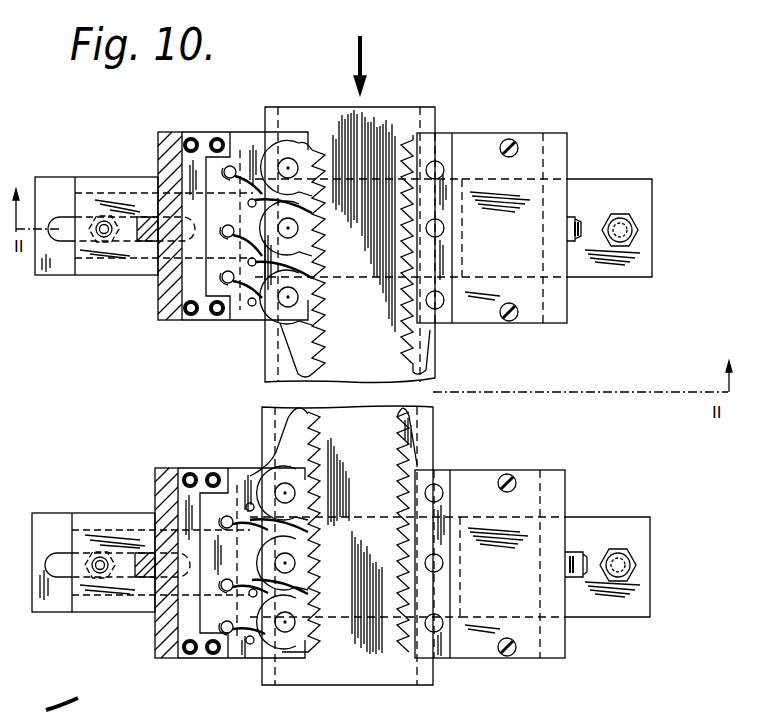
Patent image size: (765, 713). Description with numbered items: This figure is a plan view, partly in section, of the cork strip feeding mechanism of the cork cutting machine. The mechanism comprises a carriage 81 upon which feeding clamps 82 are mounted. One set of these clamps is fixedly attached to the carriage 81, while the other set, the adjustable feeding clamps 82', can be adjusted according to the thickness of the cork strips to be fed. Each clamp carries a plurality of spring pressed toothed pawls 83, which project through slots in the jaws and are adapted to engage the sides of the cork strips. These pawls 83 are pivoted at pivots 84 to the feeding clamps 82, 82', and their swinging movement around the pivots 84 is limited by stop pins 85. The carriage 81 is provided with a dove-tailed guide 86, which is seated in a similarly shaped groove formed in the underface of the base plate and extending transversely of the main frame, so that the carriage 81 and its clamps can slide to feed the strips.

The carriage 81 is at (605, 519).
The feeding clamps 82 is at (491, 378).
The adjustable feeding clamps 82' is at (166, 377).
The spring pressed toothed pawls 83 is at (317, 152).
The pivots 84 is at (290, 162).
The stop pins 85 is at (243, 405).
The dove-tailed guide 86 is at (372, 680).